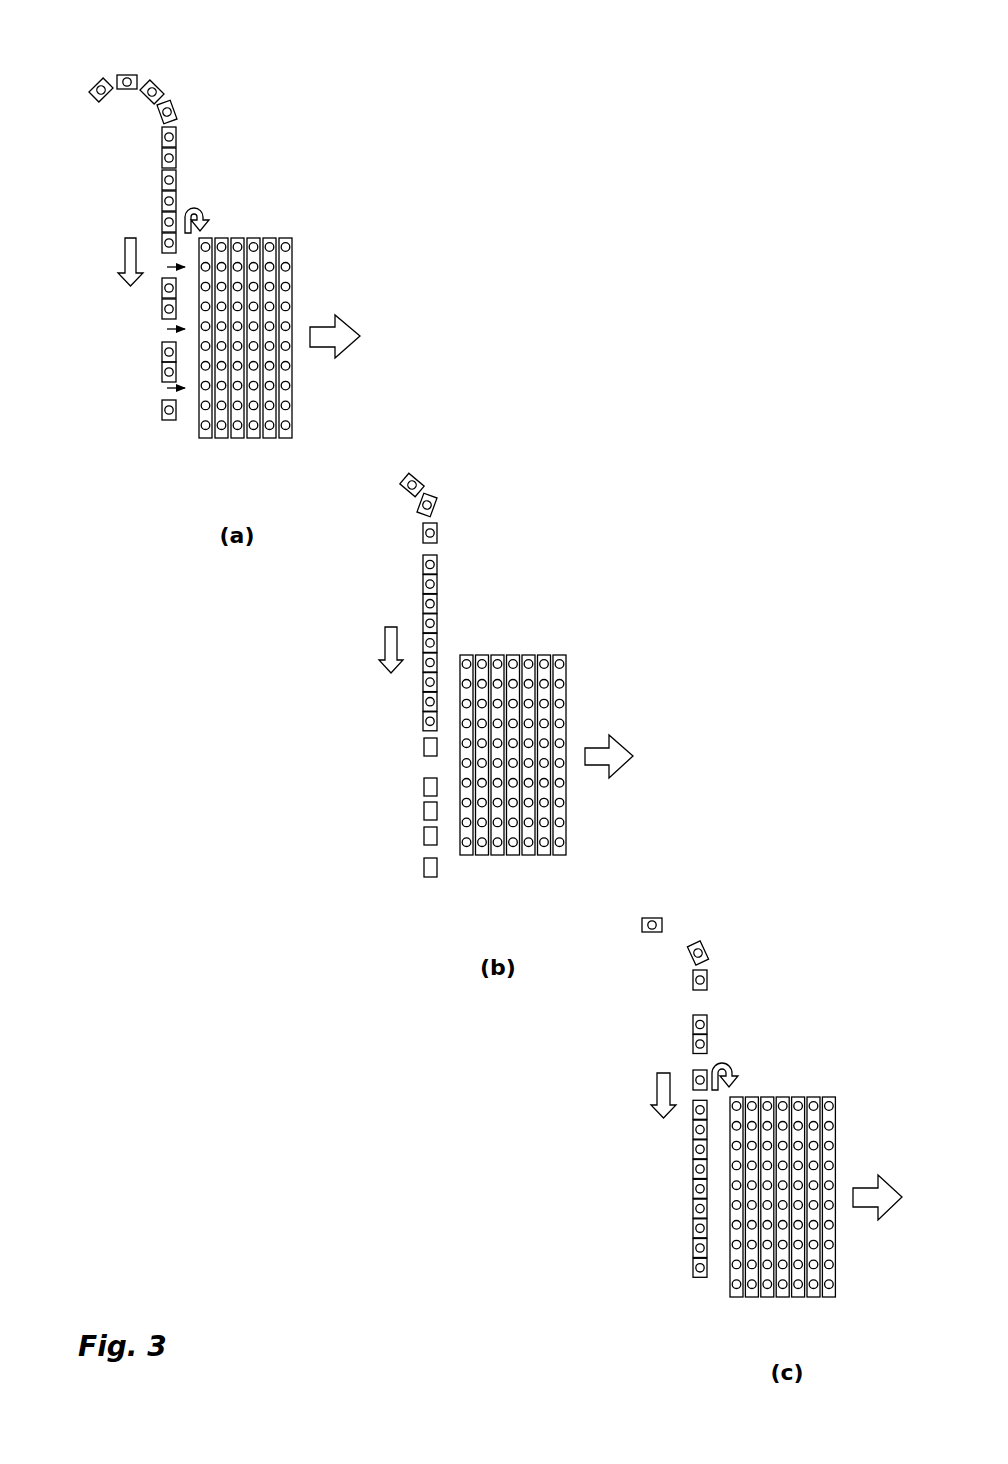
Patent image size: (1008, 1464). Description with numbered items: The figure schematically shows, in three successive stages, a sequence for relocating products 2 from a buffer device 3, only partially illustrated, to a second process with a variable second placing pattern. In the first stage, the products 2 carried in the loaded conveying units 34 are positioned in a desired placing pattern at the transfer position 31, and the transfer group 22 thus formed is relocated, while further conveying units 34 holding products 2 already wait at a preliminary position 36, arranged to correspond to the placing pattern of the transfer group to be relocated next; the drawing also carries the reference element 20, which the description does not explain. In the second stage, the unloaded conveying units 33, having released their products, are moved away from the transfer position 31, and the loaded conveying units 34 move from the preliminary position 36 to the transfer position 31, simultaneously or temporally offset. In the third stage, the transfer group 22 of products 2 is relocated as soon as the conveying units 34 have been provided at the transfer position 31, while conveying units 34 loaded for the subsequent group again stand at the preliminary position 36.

The products 2 is at (167, 103).
The buffer device 3 is at (366, 137).
The tray / receiving array 20 is at (205, 425).
The transfer group 22 is at (191, 194).
The transfer position 31 is at (119, 317).
The unloaded conveying units 33 is at (424, 808).
The loaded conveying units 34 is at (162, 173).
The preliminary position 36 is at (203, 50).